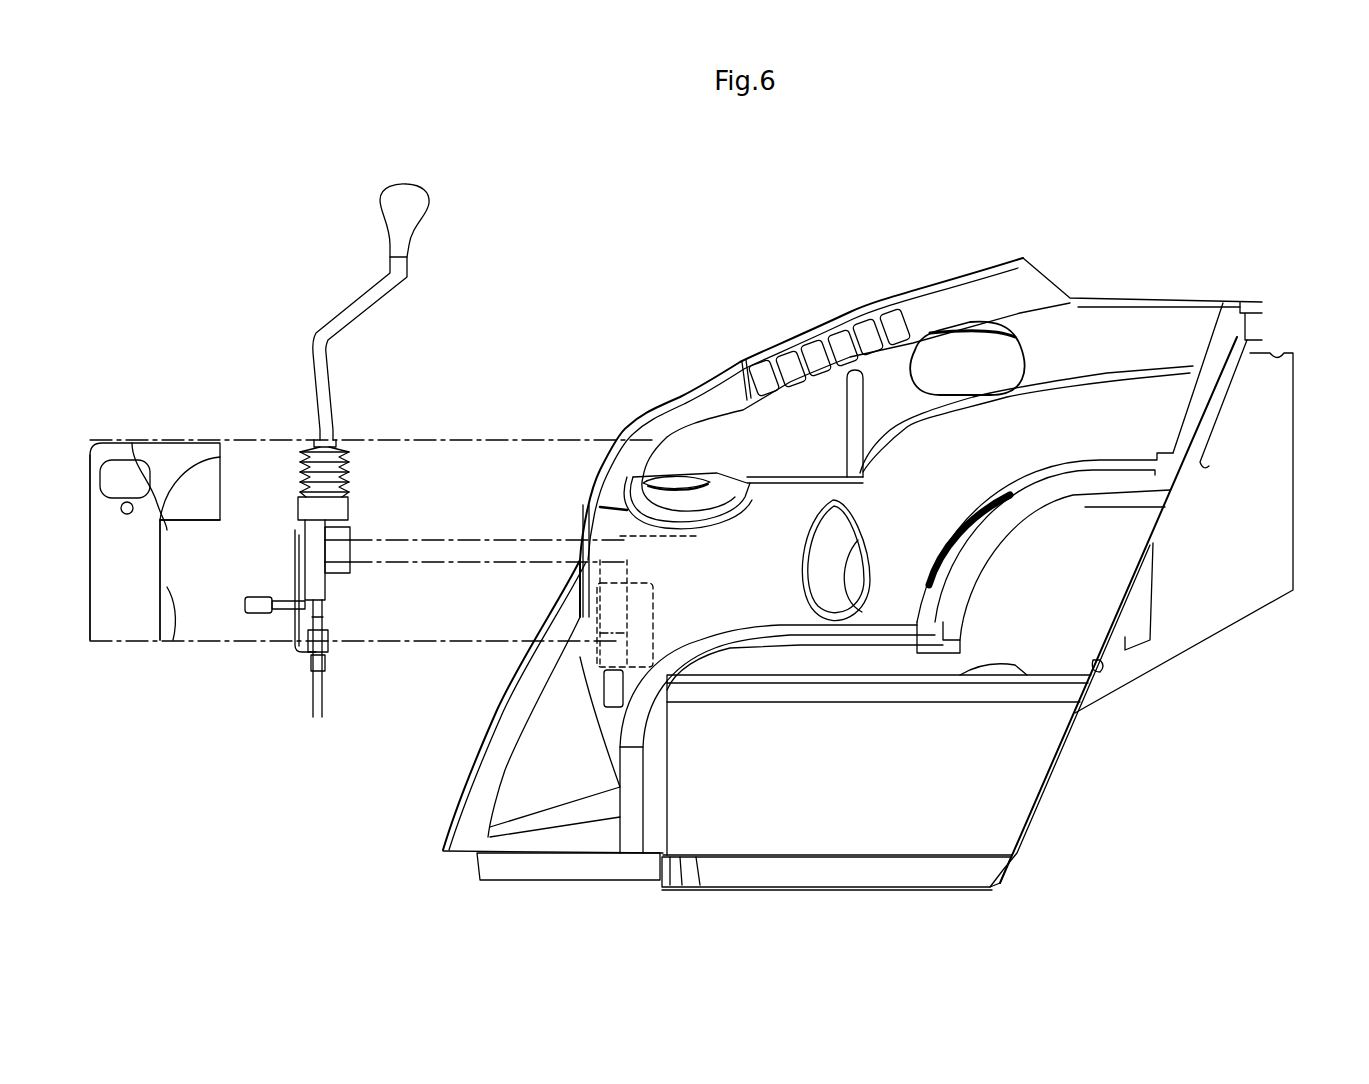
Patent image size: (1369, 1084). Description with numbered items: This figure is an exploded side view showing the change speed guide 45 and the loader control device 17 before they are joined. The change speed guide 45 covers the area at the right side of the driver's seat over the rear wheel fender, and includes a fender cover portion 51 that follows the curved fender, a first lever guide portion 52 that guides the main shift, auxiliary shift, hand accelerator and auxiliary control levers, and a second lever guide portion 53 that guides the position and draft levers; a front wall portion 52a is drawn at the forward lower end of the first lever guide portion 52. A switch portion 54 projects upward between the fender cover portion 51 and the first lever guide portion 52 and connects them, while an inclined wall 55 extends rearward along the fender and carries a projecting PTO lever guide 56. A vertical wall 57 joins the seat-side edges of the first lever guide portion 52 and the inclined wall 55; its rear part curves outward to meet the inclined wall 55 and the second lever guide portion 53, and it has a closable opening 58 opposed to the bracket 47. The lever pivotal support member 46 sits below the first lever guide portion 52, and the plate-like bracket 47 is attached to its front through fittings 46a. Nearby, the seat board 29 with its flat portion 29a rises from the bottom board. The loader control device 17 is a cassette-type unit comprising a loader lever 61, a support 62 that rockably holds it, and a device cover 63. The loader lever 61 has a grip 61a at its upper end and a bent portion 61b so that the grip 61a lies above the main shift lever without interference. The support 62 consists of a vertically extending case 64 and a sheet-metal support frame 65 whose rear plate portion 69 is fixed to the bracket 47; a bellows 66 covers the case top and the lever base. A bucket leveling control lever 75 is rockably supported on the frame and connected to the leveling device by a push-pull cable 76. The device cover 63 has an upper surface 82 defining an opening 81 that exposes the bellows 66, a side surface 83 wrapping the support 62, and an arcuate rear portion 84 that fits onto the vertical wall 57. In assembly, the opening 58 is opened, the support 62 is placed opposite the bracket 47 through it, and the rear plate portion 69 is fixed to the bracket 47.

The loader control device 17 is at (238, 313).
The seat board 29 is at (673, 812).
The flat portion 29a is at (1027, 674).
The change speed guide 45 is at (1190, 238).
The lever pivotal support member 46 is at (703, 540).
The fittings 46a is at (600, 652).
The bracket 47 is at (630, 643).
The fender cover portion 51 is at (480, 773).
The first lever guide portion 52 is at (708, 478).
The cowl front wall 52a is at (585, 508).
The second lever guide portion 53 is at (1075, 490).
The switch portion 54 is at (878, 300).
The inclined wall 55 is at (1060, 340).
The PTO lever guide 56 is at (970, 360).
The vertical wall 57 is at (977, 433).
The closable opening 58 is at (607, 575).
The loader lever 61 is at (353, 213).
The grip 61a is at (405, 200).
The bent portion 61b is at (338, 320).
The support 62 is at (300, 742).
The device cover 63 is at (98, 405).
The case 64 is at (304, 575).
The support frame 65 is at (298, 655).
The bellows 66 is at (347, 470).
The rear plate portion 69 is at (352, 575).
The bucket leveling control lever 75 is at (252, 604).
The push-pull cable 76 is at (345, 685).
The opening 81 is at (131, 470).
The upper surface 82 is at (192, 452).
The side surface 83 is at (108, 550).
The rear portion 84 is at (173, 625).